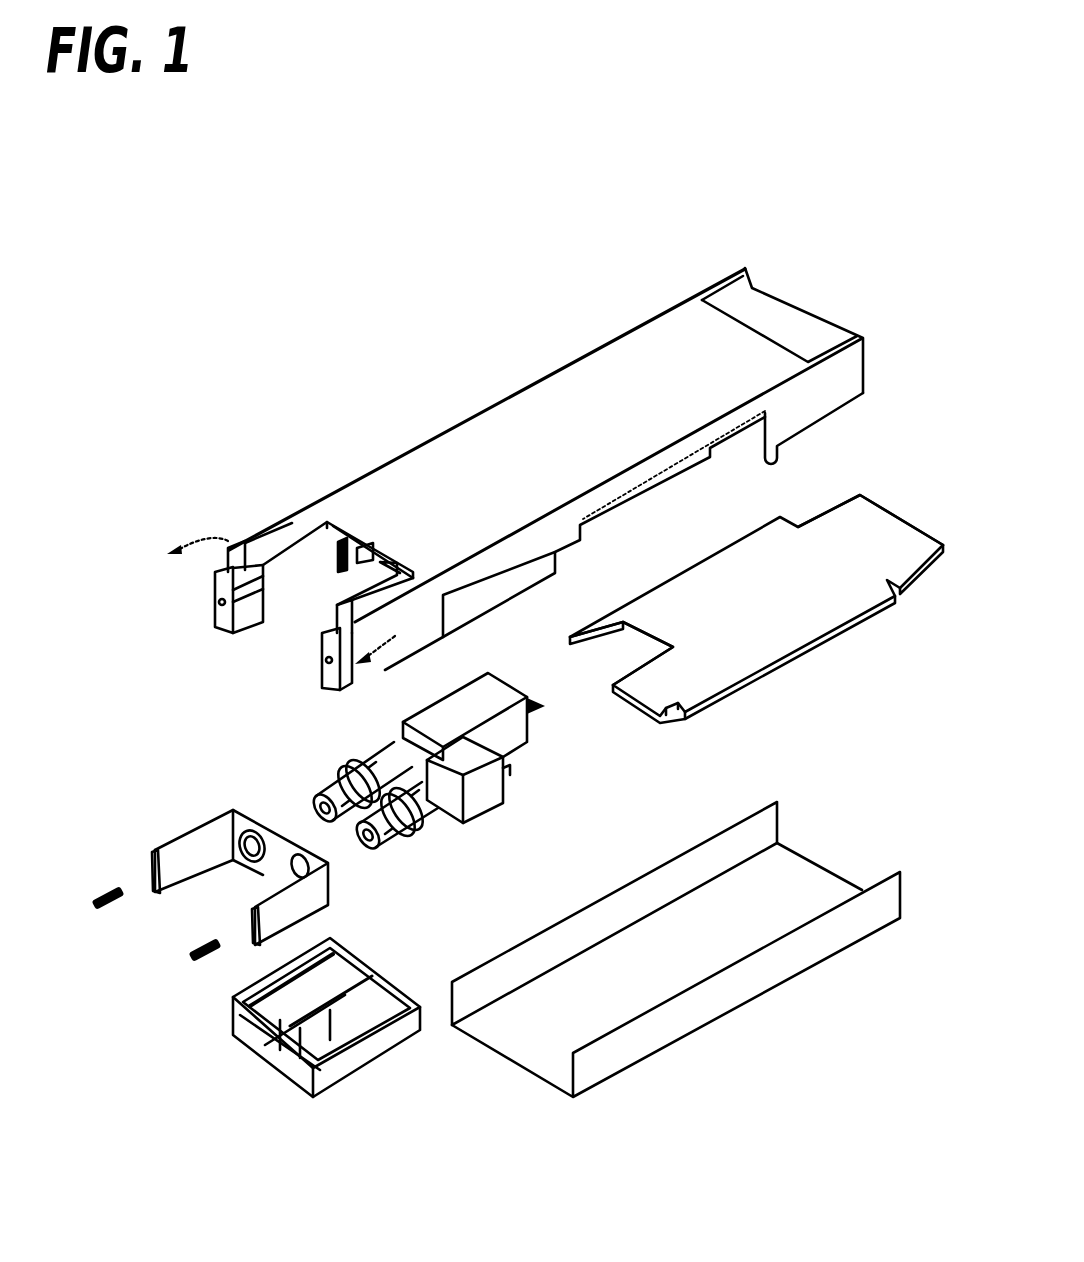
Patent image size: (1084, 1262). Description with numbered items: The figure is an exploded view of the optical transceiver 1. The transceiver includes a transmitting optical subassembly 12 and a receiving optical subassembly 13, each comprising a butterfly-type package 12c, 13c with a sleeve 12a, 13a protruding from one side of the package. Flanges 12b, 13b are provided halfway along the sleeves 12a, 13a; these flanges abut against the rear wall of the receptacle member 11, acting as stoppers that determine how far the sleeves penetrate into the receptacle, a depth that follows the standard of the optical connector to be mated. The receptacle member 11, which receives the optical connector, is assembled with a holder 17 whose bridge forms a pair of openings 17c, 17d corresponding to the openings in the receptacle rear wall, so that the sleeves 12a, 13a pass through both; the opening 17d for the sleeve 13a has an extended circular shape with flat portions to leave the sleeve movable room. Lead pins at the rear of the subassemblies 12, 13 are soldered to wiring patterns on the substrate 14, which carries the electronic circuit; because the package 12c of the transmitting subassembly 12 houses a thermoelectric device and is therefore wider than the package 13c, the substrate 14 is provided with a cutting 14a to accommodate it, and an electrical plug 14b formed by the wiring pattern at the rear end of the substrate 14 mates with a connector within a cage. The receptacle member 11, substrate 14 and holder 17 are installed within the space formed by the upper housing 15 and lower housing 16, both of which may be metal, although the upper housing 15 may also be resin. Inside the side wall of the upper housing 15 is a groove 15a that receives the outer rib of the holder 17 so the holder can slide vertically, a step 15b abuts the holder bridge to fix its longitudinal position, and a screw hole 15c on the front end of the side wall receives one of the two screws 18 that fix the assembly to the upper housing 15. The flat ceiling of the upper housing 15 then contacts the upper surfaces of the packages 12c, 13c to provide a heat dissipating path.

The optical transceiver 1 is at (804, 243).
The receptacle member 11 is at (340, 1065).
The transmitting optical subassembly 12 is at (322, 695).
The sleeve 12a is at (332, 787).
The flange 12b is at (350, 768).
The package 12c is at (400, 725).
The receiving optical subassembly 13 is at (537, 853).
The sleeve 13a is at (393, 838).
The flange 13b is at (433, 833).
The package 13c is at (480, 803).
The substrate 14 is at (760, 647).
The cutting 14a is at (608, 655).
The electrical plug 14b is at (873, 522).
The upper housing 15 is at (456, 444).
The groove 15a is at (265, 613).
The step 15b is at (309, 527).
The screw hole 15c is at (218, 615).
The lower housing 16 is at (743, 992).
The holder 17 is at (205, 827).
The opening 17c is at (243, 867).
The opening 17d is at (310, 883).
The screws 18 is at (118, 903).